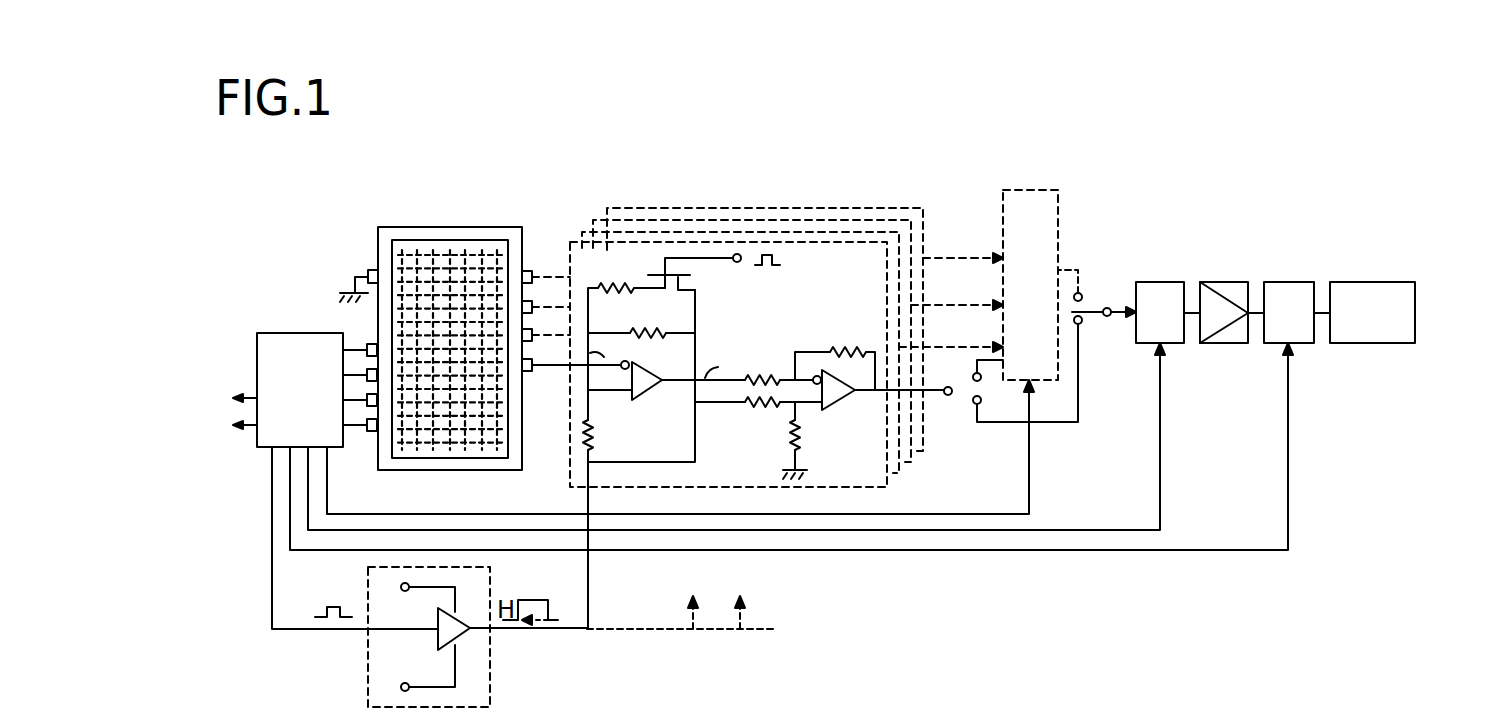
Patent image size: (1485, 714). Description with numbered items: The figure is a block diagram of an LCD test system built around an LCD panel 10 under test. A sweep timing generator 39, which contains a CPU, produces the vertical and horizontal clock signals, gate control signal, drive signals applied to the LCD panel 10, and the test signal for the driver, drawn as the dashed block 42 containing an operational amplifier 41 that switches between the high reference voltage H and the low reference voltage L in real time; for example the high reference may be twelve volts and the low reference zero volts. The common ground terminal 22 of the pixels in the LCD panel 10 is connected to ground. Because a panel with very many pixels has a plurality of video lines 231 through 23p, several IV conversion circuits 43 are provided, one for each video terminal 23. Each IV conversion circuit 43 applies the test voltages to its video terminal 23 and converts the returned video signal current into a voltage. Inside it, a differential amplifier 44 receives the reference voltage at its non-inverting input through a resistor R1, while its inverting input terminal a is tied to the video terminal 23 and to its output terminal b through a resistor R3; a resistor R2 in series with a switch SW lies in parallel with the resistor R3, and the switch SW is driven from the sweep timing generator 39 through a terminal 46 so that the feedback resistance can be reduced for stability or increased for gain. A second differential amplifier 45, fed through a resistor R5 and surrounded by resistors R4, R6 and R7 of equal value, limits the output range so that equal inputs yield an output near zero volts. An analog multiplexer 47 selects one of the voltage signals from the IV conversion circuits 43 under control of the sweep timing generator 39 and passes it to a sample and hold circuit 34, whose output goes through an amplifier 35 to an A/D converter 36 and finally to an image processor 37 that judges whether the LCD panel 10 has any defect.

The LCD panel 10 is at (465, 228).
The terminal 22 is at (368, 272).
The video terminal 23 is at (547, 322).
The video line 23p is at (526, 270).
The video line 231 is at (524, 378).
The sample and hold circuit 34 is at (1152, 290).
The amplifier 35 is at (1212, 282).
The A/D converter 36 is at (1272, 282).
The image processor 37 is at (1362, 282).
The sweep timing generator 39 is at (264, 333).
The operational amplifier 41 is at (446, 638).
The level switching circuit 42 is at (429, 637).
The IV conversion circuit 43 is at (572, 242).
The differential amplifier 44 is at (655, 387).
The differential amplifier 45 is at (840, 403).
The terminal 46 is at (740, 263).
The analog multiplexer 47 is at (1015, 190).
The resistor R1 is at (607, 435).
The resistor R2 is at (616, 274).
The resistor R3 is at (648, 319).
The resistor R4 is at (762, 363).
The resistor R5 is at (761, 417).
The resistor R6 is at (835, 354).
The resistor R7 is at (811, 440).
The switch SW is at (694, 279).